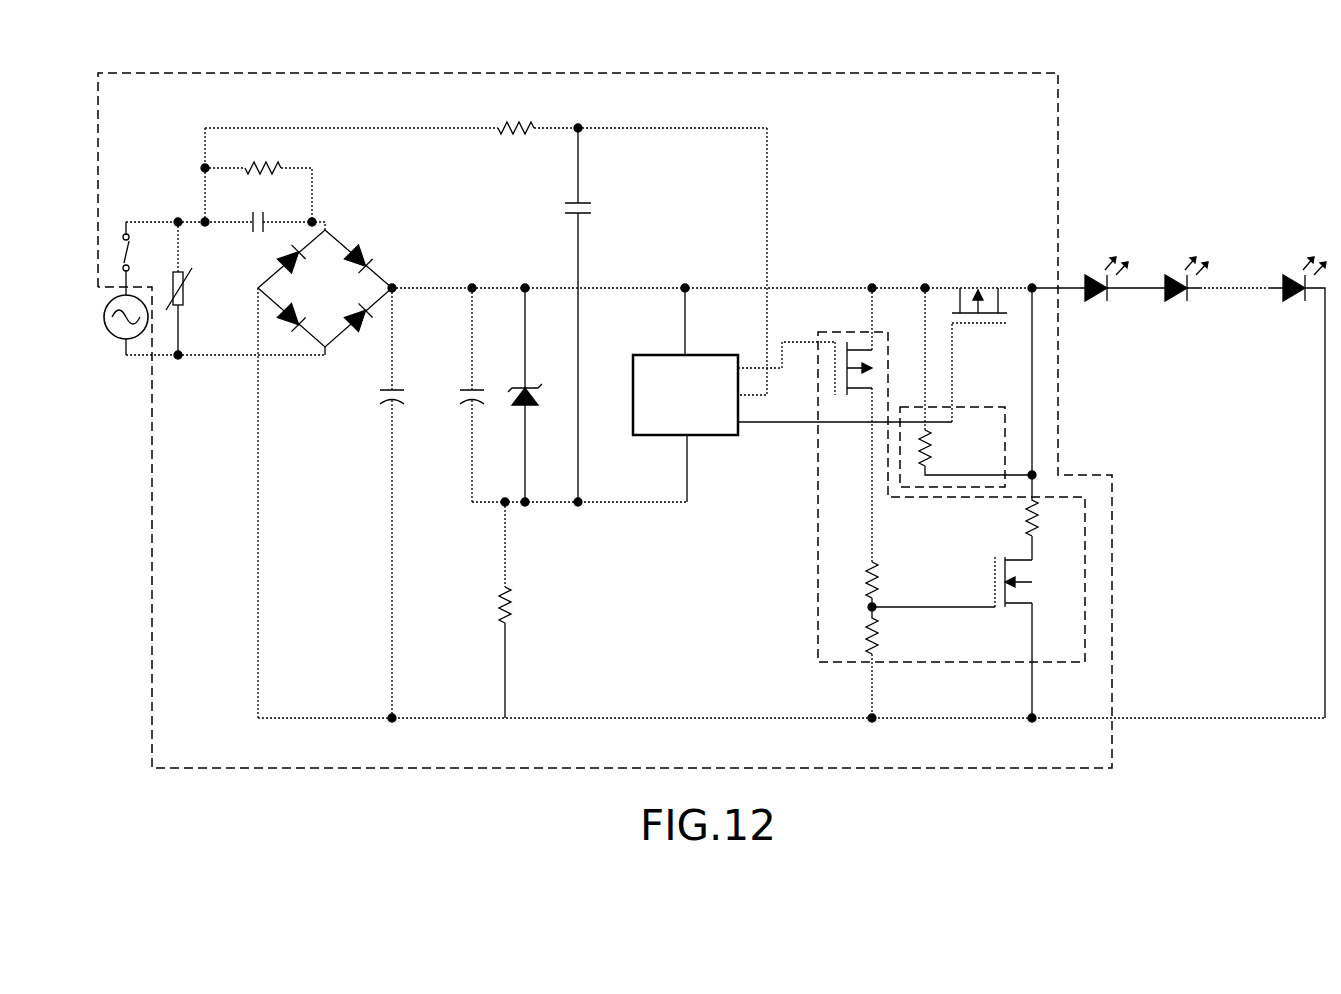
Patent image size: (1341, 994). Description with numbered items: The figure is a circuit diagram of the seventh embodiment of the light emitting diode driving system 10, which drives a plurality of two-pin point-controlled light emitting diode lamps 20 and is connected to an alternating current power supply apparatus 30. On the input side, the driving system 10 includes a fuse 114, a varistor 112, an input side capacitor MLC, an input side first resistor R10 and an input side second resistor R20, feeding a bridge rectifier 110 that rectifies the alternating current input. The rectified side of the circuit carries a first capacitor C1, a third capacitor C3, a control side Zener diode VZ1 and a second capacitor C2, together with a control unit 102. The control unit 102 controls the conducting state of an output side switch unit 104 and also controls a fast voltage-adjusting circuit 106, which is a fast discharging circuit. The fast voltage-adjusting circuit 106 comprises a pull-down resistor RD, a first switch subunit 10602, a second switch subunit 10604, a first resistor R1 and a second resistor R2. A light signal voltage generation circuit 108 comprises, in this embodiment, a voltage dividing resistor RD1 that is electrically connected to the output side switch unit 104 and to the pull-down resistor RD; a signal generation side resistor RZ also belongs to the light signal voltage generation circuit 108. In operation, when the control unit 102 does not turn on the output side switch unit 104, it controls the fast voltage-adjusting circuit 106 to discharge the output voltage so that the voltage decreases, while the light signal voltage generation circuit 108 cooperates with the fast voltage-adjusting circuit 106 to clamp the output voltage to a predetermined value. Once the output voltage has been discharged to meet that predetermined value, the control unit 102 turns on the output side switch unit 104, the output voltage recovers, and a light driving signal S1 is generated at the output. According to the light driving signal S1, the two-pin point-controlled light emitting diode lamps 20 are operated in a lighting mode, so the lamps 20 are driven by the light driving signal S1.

The light emitting diode driving system 10 is at (578, 80).
The two-pin point-controlled light emitting diode lamps 20 is at (1300, 250).
The alternating current power supply apparatus 30 is at (110, 325).
The control unit 102 is at (648, 358).
The output side switch unit 104 is at (992, 369).
The fast voltage-adjusting circuit 106 is at (820, 478).
The light signal voltage generation circuit 108 is at (968, 387).
The bridge rectifier 110 is at (325, 292).
The varistor 112 is at (196, 288).
The fuse 114 is at (147, 258).
The first switch subunit 10602 is at (839, 425).
The second switch subunit 10604 is at (1049, 637).
The input side first resistor R10 is at (258, 181).
The input side second resistor R20 is at (486, 116).
The input side capacitor MLC is at (225, 211).
The first capacitor C1 is at (376, 503).
The second capacitor C2 is at (596, 315).
The third capacitor C3 is at (456, 395).
The control side Zener diode VZ1 is at (545, 395).
The signal generation side resistor RZ is at (484, 610).
The pull-down resistor RD is at (1052, 517).
The voltage dividing resistor RD1 is at (1005, 358).
The first resistor R1 is at (890, 584).
The second resistor R2 is at (890, 662).
The light driving signal S1 is at (1068, 288).